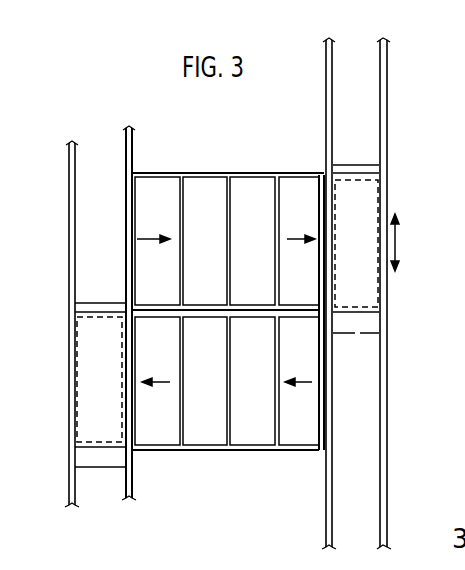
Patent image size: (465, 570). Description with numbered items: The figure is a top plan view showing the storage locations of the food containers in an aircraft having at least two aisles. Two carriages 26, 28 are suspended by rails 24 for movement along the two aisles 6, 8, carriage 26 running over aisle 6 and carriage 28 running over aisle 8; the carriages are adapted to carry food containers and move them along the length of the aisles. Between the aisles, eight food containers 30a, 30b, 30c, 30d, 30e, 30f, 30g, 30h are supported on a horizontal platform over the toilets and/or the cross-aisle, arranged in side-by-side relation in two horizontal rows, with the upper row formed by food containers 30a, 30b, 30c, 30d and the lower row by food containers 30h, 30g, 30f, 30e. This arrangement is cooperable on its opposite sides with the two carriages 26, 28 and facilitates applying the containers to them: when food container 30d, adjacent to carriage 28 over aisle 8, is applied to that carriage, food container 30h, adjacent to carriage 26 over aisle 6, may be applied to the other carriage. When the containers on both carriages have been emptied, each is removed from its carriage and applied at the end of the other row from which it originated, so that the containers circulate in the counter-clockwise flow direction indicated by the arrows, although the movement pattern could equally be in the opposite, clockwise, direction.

The aisle 6 is at (103, 508).
The aisle 8 is at (362, 510).
The guide rails 24 is at (397, 22).
The carriage 26 is at (90, 371).
The carriage 28 is at (365, 228).
The food container 30a is at (155, 200).
The food container 30b is at (205, 195).
The food container 30c is at (250, 195).
The food container 30d is at (300, 195).
The food container 30e is at (300, 420).
The food container 30f is at (254, 428).
The food container 30g is at (205, 428).
The food container 30h is at (162, 428).